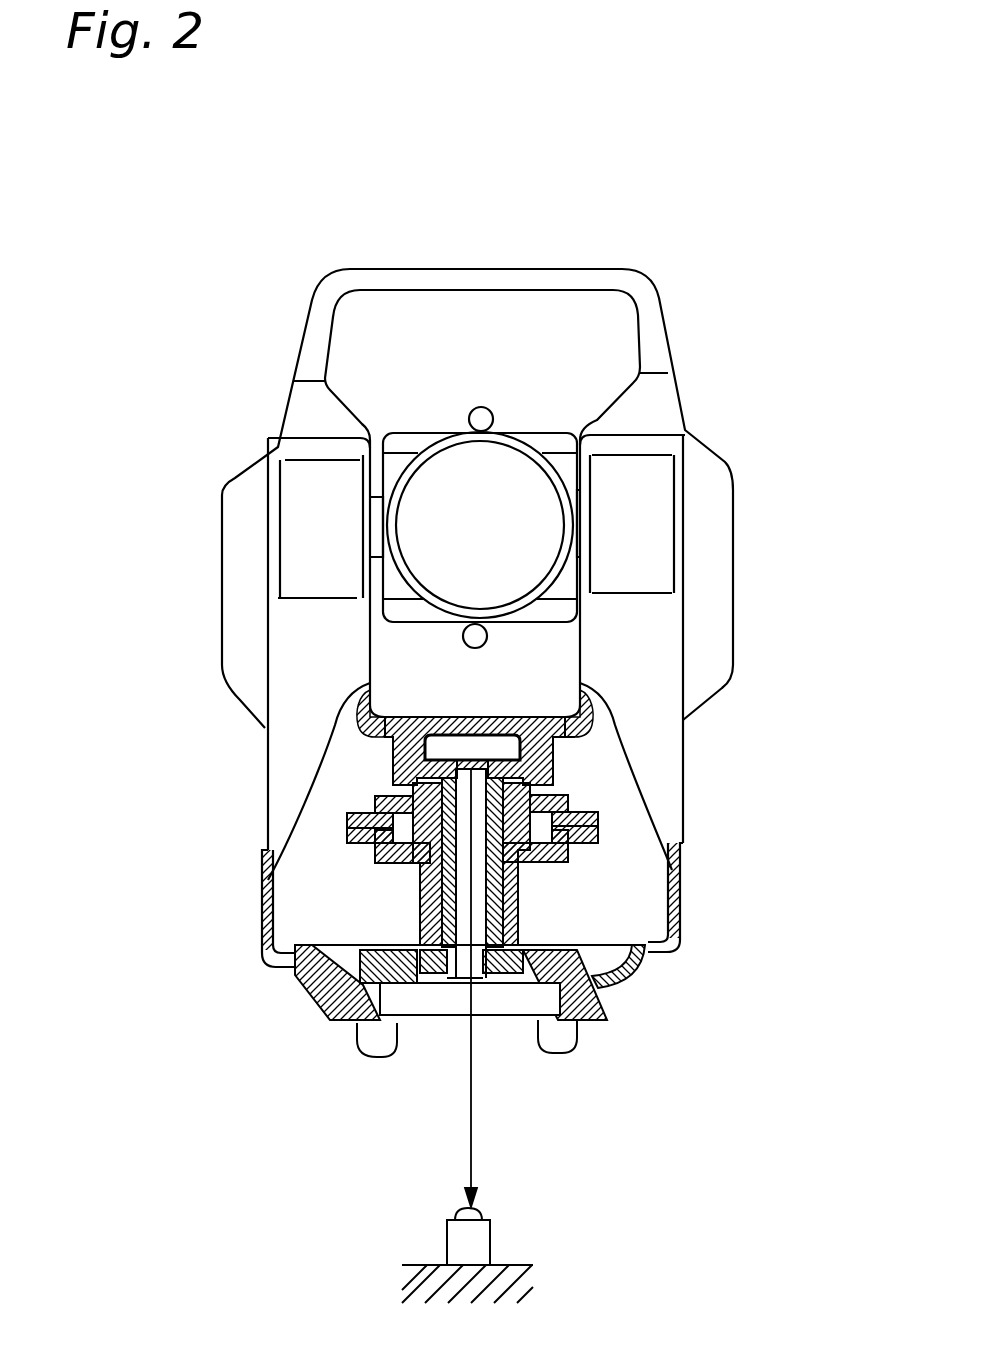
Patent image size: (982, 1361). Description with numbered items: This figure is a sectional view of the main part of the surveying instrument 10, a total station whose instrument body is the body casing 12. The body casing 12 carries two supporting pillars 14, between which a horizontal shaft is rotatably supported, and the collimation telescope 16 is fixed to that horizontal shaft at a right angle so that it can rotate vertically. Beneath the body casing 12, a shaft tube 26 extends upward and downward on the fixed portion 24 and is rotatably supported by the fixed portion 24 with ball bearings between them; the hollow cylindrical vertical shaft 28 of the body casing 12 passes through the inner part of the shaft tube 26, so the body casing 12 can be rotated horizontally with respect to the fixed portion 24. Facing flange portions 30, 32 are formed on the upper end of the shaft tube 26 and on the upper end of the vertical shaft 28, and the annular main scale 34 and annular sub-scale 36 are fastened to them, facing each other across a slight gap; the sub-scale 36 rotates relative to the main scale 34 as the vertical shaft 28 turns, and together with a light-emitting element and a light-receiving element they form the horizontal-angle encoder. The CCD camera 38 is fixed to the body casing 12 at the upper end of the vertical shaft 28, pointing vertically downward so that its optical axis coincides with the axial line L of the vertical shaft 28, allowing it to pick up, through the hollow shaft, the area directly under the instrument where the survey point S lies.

The surveying instrument 10 is at (738, 466).
The body casing 12 is at (727, 583).
The supporting pillars 14 is at (643, 663).
The collimation telescope 16 is at (425, 437).
The fixed portion 24 is at (325, 1000).
The shaft tube 26 is at (410, 895).
The vertical shaft 28 is at (525, 893).
The flange portion 30 is at (570, 848).
The flange portion 32 is at (568, 800).
The main scale 34 is at (345, 840).
The sub-scale 36 is at (345, 818).
The CCD camera 38 is at (522, 748).
The axial line L is at (473, 1132).
The survey point S is at (492, 1242).